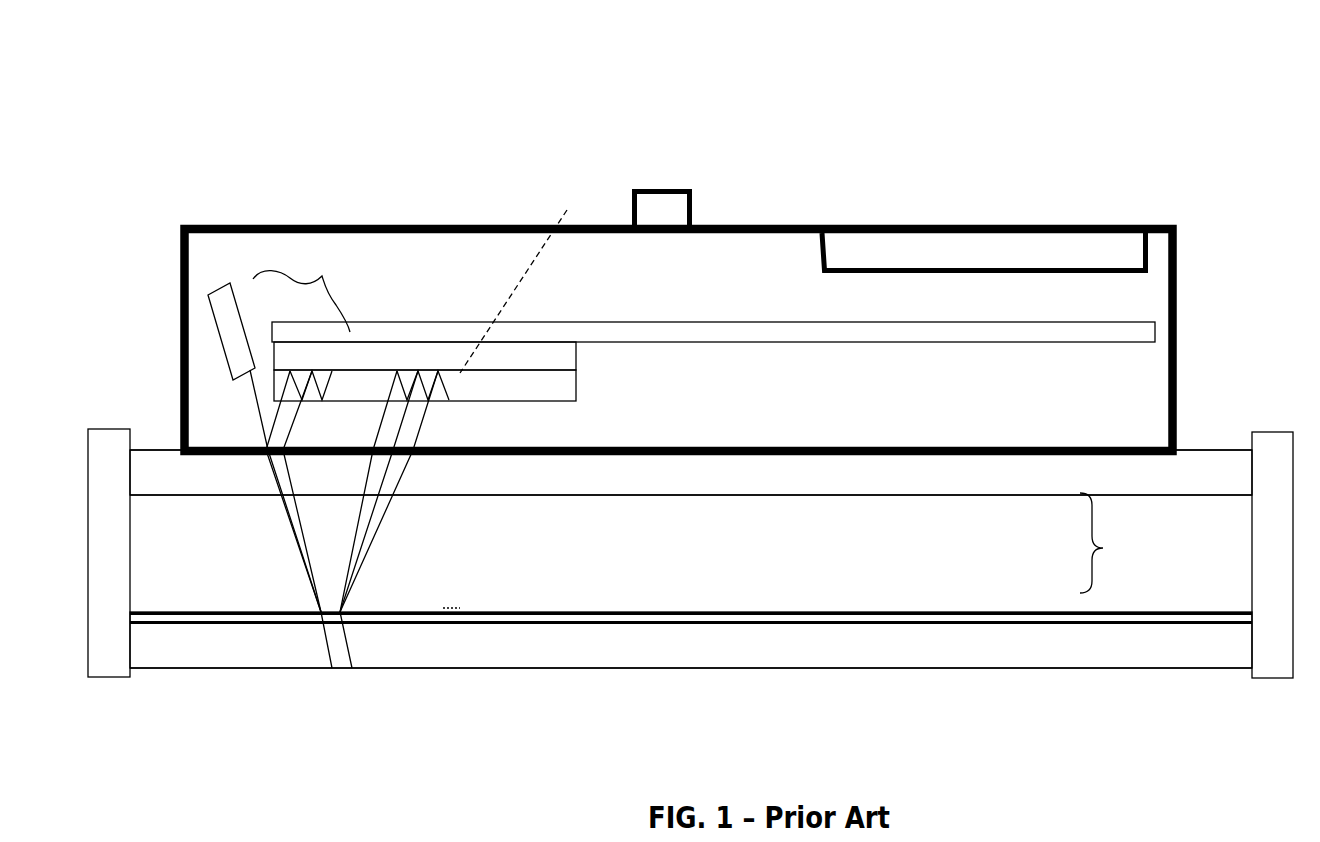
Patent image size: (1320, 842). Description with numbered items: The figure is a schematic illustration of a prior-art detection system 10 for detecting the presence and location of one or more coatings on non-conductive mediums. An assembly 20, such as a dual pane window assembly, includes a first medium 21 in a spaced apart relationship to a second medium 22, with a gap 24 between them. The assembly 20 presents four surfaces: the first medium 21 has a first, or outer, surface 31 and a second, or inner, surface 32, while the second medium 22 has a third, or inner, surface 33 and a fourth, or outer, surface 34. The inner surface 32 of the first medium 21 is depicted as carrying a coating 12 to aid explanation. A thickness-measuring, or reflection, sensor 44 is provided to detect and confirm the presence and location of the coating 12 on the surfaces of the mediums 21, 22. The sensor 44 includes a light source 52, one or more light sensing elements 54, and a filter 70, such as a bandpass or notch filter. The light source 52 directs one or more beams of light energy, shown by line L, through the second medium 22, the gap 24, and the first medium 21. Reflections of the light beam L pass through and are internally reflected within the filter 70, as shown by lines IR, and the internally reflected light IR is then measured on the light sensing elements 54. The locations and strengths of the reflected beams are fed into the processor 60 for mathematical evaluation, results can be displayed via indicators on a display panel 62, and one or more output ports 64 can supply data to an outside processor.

The detection system 10 is at (293, 165).
The coating 12 is at (487, 605).
The assembly 20 is at (160, 673).
The first medium 21 is at (785, 643).
The second medium 22 is at (800, 478).
The gap 24 is at (1114, 543).
The first surface 31 is at (1227, 668).
The second surface 32 is at (1202, 625).
The third surface 33 is at (1233, 490).
The fourth surface 34 is at (1205, 445).
The thickness-measuring sensor 44 is at (301, 290).
The light source 52 is at (213, 305).
The light sensing elements 54 is at (578, 357).
The processor 60 is at (1158, 328).
The display panel 62 is at (1152, 252).
The output ports 64 is at (736, 220).
The filter 70 is at (578, 381).
The light beam L is at (253, 397).
The internally reflected light IR is at (519, 269).